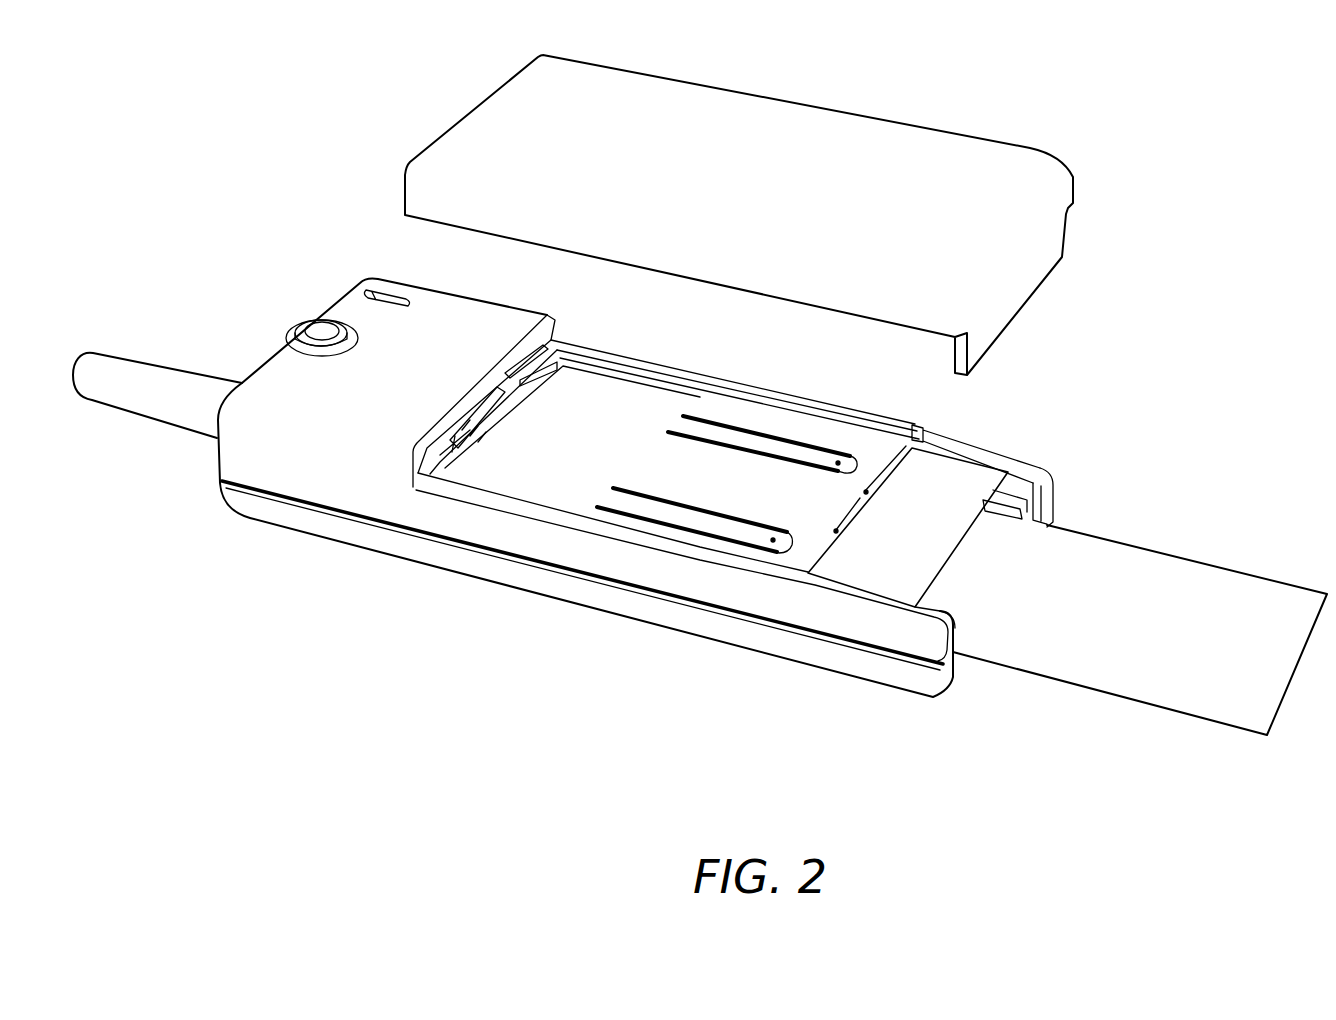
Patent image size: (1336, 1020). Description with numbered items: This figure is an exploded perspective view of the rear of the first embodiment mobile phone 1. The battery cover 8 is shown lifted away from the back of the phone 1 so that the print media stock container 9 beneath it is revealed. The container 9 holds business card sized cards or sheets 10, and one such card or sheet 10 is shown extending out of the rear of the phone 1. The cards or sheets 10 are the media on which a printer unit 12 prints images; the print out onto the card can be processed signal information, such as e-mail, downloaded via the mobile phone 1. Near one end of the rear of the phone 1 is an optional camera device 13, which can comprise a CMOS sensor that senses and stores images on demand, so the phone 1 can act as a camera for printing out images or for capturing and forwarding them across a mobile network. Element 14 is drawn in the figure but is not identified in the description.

The phone 1 is at (255, 708).
The battery cover 8 is at (1030, 148).
The print media stock container 9 is at (620, 397).
The cards or sheets 10 is at (1147, 550).
The printer unit 12 is at (958, 473).
The camera device 13 is at (307, 320).
The guide rails 14 is at (765, 440).